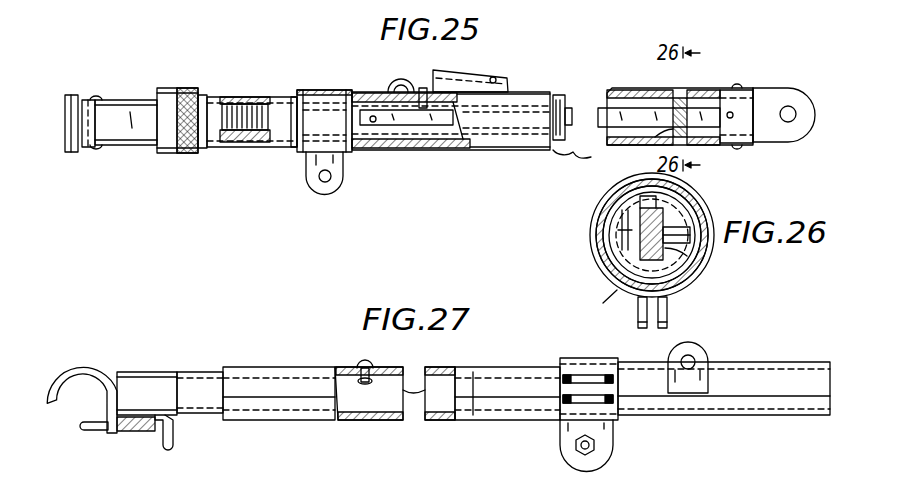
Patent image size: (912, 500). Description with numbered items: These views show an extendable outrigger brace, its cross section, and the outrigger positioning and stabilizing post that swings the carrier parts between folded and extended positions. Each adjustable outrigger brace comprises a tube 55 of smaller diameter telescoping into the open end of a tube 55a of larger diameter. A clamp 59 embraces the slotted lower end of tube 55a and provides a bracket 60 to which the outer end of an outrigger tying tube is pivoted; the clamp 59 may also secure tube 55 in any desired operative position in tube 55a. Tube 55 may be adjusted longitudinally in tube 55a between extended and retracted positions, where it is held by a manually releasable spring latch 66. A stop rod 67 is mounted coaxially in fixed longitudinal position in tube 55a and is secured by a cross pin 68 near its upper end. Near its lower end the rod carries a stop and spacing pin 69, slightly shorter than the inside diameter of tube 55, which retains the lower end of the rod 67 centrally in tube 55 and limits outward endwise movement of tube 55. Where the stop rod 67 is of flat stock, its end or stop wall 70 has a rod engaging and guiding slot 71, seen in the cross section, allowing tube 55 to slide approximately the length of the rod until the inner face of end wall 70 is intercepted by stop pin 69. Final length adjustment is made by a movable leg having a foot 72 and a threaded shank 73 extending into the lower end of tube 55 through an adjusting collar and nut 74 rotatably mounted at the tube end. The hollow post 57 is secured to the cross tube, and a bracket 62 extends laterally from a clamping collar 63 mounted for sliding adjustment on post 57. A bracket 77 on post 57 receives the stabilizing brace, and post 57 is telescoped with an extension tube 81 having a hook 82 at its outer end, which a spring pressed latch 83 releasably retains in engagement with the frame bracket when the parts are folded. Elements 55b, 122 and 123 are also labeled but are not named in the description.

In FIG. 25, the tube 55 is at (213, 100).
In FIG. 26, the tube 55 is at (613, 197).
In FIG. 25, the tube 55a is at (507, 150).
In FIG. 26, the tube 55a is at (693, 180).
In FIG. 25, the inner rod of tube 55b is at (618, 92).
In FIG. 27, the post 57 is at (293, 383).
In FIG. 25, the clamp 59 is at (333, 90).
In FIG. 26, the clamp 59 is at (593, 250).
In FIG. 25, the bracket 60 is at (305, 174).
In FIG. 26, the bracket 60 is at (670, 312).
In FIG. 27, the bracket 62 is at (573, 373).
In FIG. 27, the clamping collar 63 is at (618, 422).
In FIG. 25, the spring latch 66 is at (403, 85).
In FIG. 25, the stop rod 67 is at (567, 98).
In FIG. 26, the stop rod 67 is at (700, 205).
In FIG. 25, the cross pin 68 is at (732, 113).
In FIG. 25, the stop and spacing pin 69 is at (373, 115).
In FIG. 26, the stop and spacing pin 69 is at (613, 277).
In FIG. 25, the end or stop wall 70 is at (650, 141).
In FIG. 26, the end or stop wall 70 is at (620, 305).
In FIG. 26, the rod engaging and guiding slot 71 is at (697, 260).
In FIG. 25, the foot 72 is at (70, 152).
In FIG. 25, the threaded shank 73 is at (247, 107).
In FIG. 25, the adjusting collar and nut 74 is at (167, 90).
In FIG. 27, the bracket 77 is at (703, 354).
In FIG. 27, the extension tube 81 is at (197, 416).
In FIG. 27, the hook 82 is at (92, 363).
In FIG. 27, the spring pressed latch 83 is at (95, 431).
In FIG. 27, the bolt 122 is at (372, 362).
In FIG. 27, the sleeve 123 is at (393, 365).